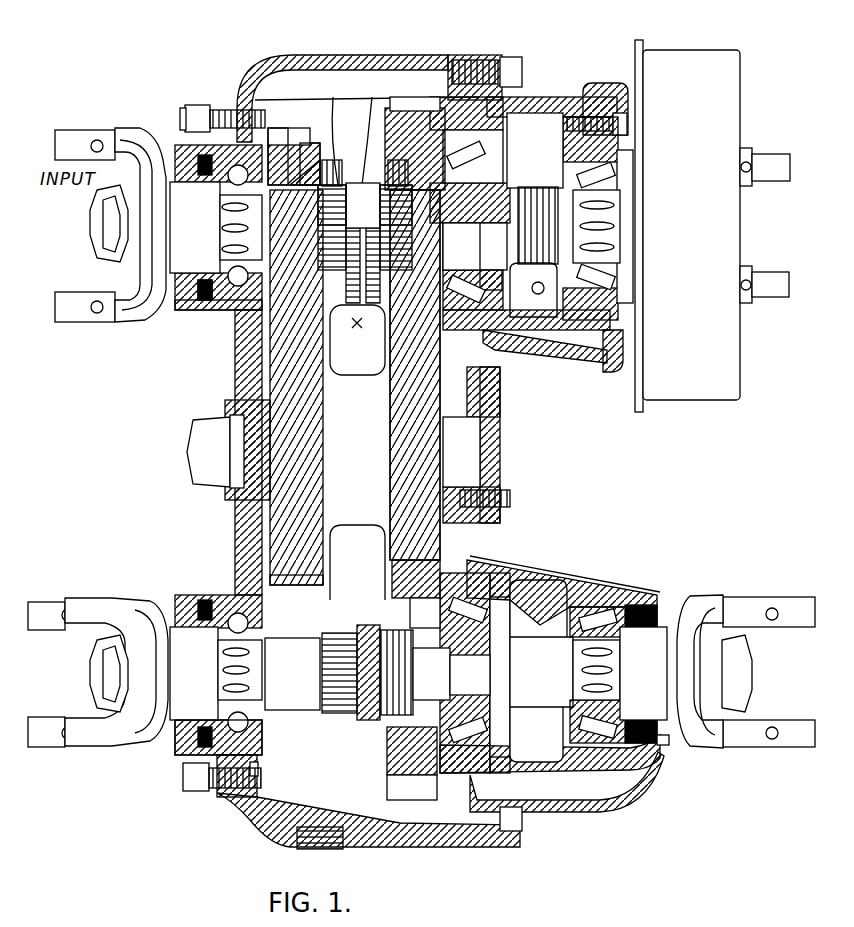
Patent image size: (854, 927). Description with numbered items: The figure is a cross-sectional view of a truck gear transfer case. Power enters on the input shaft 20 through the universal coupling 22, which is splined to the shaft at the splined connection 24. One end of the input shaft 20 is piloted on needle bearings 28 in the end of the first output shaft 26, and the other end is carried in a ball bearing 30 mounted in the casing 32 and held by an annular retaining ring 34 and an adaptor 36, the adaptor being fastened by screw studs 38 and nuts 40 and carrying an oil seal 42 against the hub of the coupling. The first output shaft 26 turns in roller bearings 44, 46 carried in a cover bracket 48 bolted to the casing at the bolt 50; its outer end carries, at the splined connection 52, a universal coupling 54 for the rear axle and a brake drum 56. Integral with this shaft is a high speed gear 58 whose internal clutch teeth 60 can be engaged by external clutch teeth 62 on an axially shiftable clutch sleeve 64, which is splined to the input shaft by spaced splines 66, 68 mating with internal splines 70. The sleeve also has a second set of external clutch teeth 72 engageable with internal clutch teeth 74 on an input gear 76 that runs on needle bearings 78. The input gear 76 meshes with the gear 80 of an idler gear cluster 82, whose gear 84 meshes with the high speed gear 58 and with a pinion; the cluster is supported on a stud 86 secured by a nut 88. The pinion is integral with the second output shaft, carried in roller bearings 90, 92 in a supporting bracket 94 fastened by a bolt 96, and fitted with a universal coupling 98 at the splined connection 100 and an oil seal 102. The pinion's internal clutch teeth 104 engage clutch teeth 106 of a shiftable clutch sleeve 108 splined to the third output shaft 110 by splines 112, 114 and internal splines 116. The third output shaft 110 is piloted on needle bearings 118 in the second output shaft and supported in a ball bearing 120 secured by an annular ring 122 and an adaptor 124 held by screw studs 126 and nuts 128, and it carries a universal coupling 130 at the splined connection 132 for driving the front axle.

The input shaft 20 is at (240, 213).
The universal coupling 22 is at (135, 308).
The splined connection 24 is at (225, 248).
The first output shaft 26 is at (560, 185).
The needle bearings 28 is at (475, 185).
The ball bearing 30 is at (236, 290).
The casing 32 is at (292, 56).
The annular retaining ring 34 is at (235, 310).
The adaptor 36 is at (205, 302).
The screw studs 38 is at (222, 105).
The nuts 40 is at (188, 108).
The oil seal 42 is at (180, 300).
The roller bearing 44 is at (466, 318).
The roller bearing 46 is at (618, 185).
The cover bracket 48 is at (548, 352).
The bolt 50 is at (520, 58).
The splined connection 52 is at (610, 222).
The universal coupling 54 is at (773, 154).
The brake drum 56 is at (695, 50).
The high speed gear 58 is at (455, 60).
The internal clutch teeth 60 is at (405, 106).
The external clutch teeth 62 is at (392, 160).
The clutch sleeve 64 is at (355, 183).
The splines 66 is at (318, 216).
The splines 68 is at (380, 216).
The internal splines 70 is at (350, 186).
The external clutch teeth 72 is at (335, 160).
The internal clutch teeth 74 is at (313, 150).
The input gear 76 is at (283, 135).
The needle bearings 78 is at (280, 185).
The gear 80 is at (292, 583).
The idler gear cluster 82 is at (372, 446).
The gear 84 is at (392, 472).
The stud 86 is at (470, 450).
The nut 88 is at (205, 485).
The roller bearing 90 is at (592, 612).
The roller bearing 92 is at (490, 590).
The supporting bracket 94 is at (560, 562).
The bolt 96 is at (524, 826).
The universal coupling 98 is at (730, 748).
The splined connection 100 is at (612, 670).
The oil seal 102 is at (668, 746).
The internal clutch teeth 104 is at (395, 600).
The clutch teeth 106 is at (420, 608).
The clutch sleeve 108 is at (372, 725).
The third output shaft 110 is at (305, 678).
The splines 112 is at (335, 716).
The splines 114 is at (372, 700).
The internal splines 116 is at (380, 630).
The needle bearings 118 is at (500, 612).
The ball bearing 120 is at (262, 735).
The annular ring 122 is at (225, 792).
The adaptor 124 is at (190, 755).
The screw studs 126 is at (260, 778).
The nuts 128 is at (190, 792).
The universal coupling 130 is at (110, 748).
The splined connection 132 is at (230, 677).